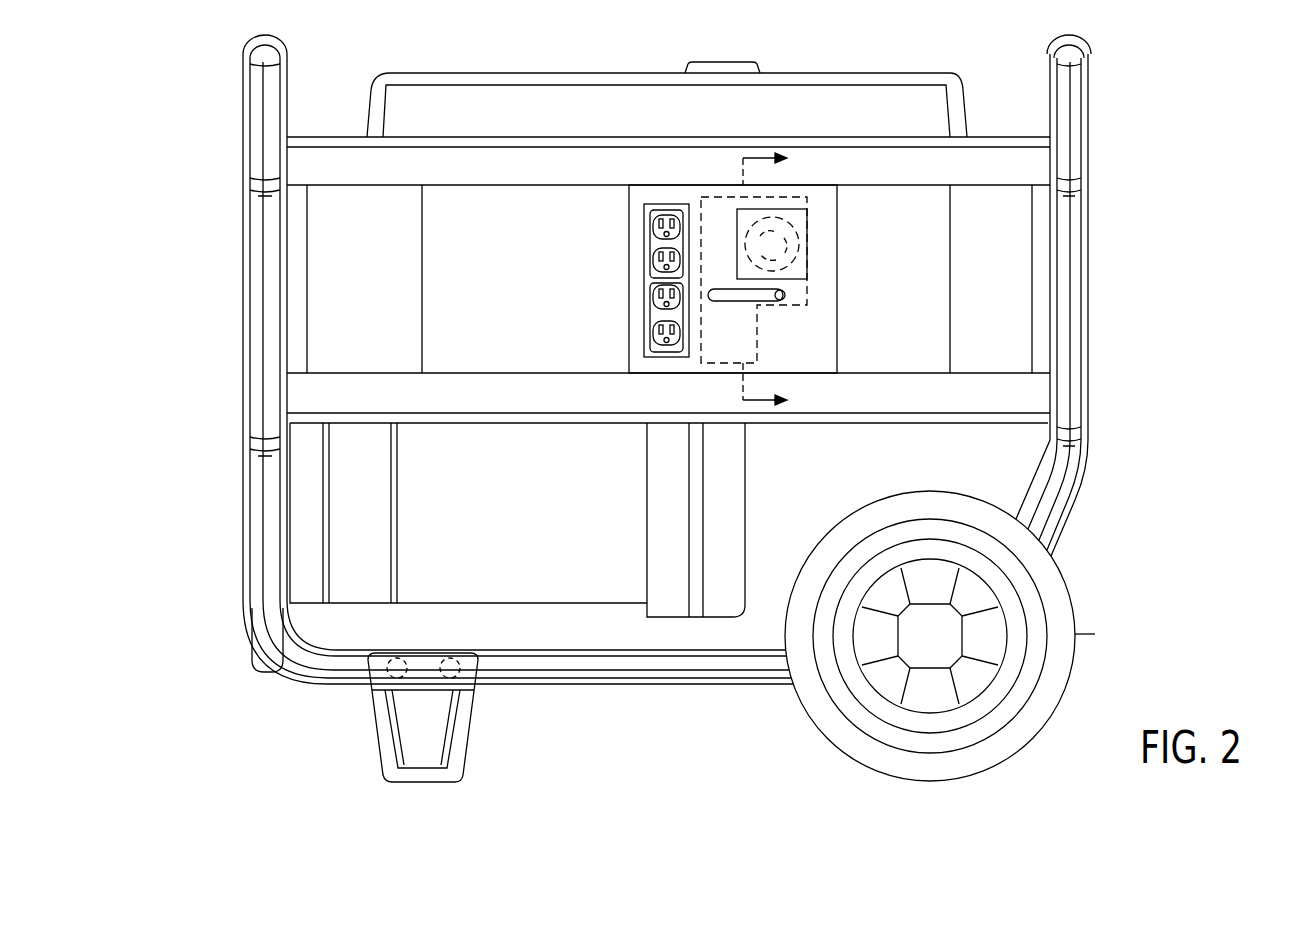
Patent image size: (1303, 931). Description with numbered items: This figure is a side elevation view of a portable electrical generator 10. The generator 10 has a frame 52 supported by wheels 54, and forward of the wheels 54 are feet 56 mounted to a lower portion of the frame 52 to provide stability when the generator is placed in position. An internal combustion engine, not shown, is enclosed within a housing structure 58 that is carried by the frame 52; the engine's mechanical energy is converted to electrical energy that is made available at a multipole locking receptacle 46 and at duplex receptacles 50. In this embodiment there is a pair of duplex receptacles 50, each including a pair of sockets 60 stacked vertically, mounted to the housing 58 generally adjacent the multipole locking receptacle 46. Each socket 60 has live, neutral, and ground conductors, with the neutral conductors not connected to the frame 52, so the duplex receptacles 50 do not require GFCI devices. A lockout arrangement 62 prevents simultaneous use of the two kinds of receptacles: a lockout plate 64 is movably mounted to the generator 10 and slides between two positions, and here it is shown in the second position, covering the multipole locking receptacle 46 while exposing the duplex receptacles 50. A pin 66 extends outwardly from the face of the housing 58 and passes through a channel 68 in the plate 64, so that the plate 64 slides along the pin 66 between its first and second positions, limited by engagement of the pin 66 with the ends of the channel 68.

The electrical generator 10 is at (1133, 146).
The multipole locking receptacle 46 is at (808, 243).
The duplex receptacle 50 is at (666, 205).
The frame 52 is at (1090, 322).
The wheels 54 is at (1075, 636).
The feet 56 is at (478, 722).
The housing structure 58 is at (330, 206).
The sockets 60 is at (652, 266).
The lockout arrangement 62 is at (779, 348).
The lockout plate 64 is at (732, 368).
The pin 66 is at (785, 295).
The channel 68 is at (735, 296).